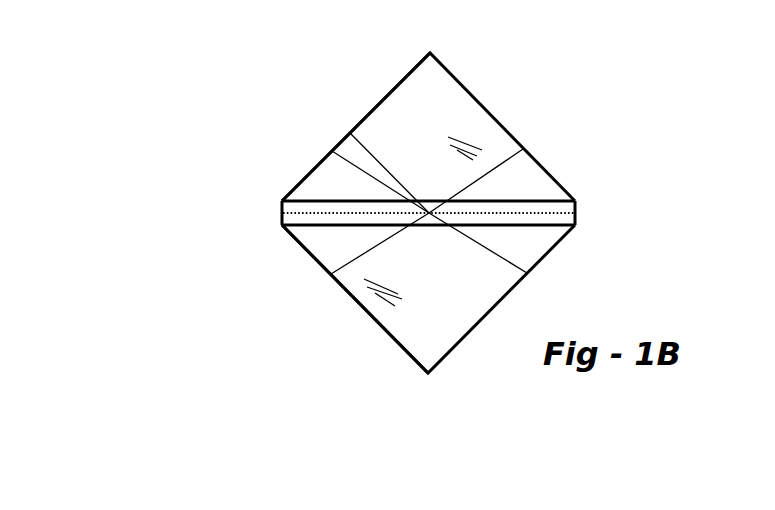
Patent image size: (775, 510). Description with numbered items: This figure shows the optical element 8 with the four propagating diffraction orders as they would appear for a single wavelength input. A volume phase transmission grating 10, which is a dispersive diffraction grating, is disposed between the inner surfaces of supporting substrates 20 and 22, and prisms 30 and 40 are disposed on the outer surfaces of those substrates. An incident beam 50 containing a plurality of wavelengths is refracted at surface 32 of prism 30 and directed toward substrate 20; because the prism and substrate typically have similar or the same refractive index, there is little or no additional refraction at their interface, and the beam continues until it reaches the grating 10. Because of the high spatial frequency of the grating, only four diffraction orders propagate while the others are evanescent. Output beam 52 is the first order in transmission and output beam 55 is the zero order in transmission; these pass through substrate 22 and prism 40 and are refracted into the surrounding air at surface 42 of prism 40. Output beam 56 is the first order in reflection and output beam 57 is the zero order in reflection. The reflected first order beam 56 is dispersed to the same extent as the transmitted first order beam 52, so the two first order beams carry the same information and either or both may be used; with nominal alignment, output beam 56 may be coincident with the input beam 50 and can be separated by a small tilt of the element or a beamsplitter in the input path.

The optical element 8 is at (538, 105).
The volume phase transmission grating 10 is at (580, 213).
The supporting substrate 20 is at (579, 203).
The supporting substrate 22 is at (579, 226).
The prism 30 is at (413, 147).
The surface of prism 32 is at (386, 93).
The prism 40 is at (486, 294).
The surface of prism 42 is at (390, 335).
The incident beam 50 is at (332, 151).
The output beam 52 is at (331, 274).
The output beam 55 is at (527, 273).
The output beam 56 is at (350, 133).
The output beam 57 is at (523, 149).